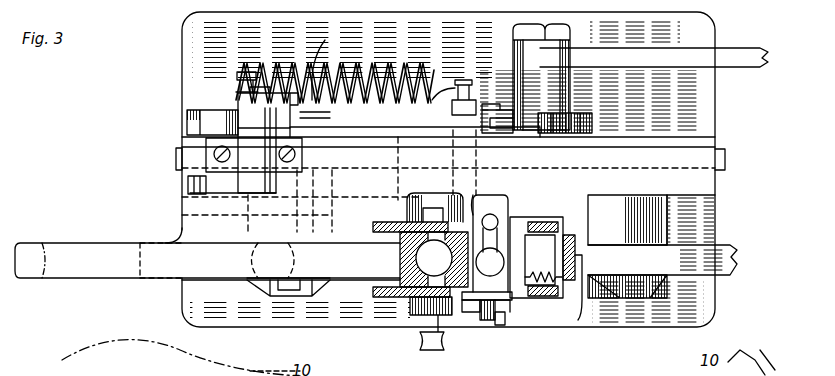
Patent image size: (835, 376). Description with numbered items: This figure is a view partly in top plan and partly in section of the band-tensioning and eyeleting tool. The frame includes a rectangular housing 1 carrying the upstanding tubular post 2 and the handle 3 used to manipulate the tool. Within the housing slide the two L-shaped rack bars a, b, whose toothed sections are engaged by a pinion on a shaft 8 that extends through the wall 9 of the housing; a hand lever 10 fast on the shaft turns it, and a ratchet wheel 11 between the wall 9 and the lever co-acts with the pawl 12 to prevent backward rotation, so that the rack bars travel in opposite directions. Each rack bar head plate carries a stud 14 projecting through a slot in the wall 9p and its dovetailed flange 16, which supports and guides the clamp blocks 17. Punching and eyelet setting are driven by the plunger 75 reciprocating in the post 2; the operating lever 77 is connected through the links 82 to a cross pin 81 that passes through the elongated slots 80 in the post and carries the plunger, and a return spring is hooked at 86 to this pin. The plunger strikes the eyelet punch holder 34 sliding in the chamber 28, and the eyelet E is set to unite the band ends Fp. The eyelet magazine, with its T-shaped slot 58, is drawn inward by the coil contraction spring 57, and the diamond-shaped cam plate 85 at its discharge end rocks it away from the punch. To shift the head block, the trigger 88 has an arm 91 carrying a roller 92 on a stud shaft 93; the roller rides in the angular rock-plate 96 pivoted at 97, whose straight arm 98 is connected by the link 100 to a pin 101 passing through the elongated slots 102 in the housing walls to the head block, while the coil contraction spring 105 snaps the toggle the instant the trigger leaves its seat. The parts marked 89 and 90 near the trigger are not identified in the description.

The housing 1 is at (712, 186).
The tubular post 2 is at (438, 290).
The handle 3 is at (70, 246).
The shaft 8 is at (555, 24).
The wall 9 is at (702, 143).
The wall 9p is at (705, 200).
The hand lever 10 is at (625, 50).
The ratchet wheel 11 is at (592, 122).
The pawl 12 is at (496, 110).
The stud 14 is at (313, 285).
The dovetailed flange 16 is at (746, 218).
The clamp block 17 is at (375, 281).
The chamber 28 is at (497, 212).
The eyelet punch holder 34 is at (490, 243).
The coil contraction spring 57 is at (536, 257).
The T-shaped slot 58 is at (577, 243).
The plunger 75 is at (434, 240).
The operating lever 77 is at (480, 305).
The elongated slots 80 is at (487, 289).
The cross pin 81 is at (420, 350).
The links 82 is at (405, 290).
The diamond shaped plate 85 is at (488, 320).
The hooked end 86 is at (500, 325).
The trigger 88 is at (188, 186).
The plate 89 is at (248, 197).
The bracket 90 is at (215, 162).
The arm 91 is at (238, 100).
The roller 92 is at (328, 58).
The stud shaft 93 is at (280, 130).
The angular rock-plate 96 is at (187, 122).
The pivot 97 is at (240, 72).
The straight arm 98 is at (328, 116).
The link 100 is at (368, 126).
The pin 101 is at (465, 80).
The elongated slots 102 is at (470, 158).
The coil contraction spring 105 is at (380, 70).
The rack bar a is at (725, 158).
The rack bar b is at (176, 160).
The eyelet E is at (578, 320).
The band end Fp is at (737, 260).